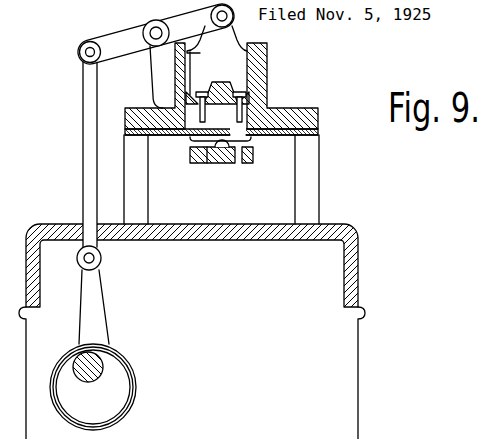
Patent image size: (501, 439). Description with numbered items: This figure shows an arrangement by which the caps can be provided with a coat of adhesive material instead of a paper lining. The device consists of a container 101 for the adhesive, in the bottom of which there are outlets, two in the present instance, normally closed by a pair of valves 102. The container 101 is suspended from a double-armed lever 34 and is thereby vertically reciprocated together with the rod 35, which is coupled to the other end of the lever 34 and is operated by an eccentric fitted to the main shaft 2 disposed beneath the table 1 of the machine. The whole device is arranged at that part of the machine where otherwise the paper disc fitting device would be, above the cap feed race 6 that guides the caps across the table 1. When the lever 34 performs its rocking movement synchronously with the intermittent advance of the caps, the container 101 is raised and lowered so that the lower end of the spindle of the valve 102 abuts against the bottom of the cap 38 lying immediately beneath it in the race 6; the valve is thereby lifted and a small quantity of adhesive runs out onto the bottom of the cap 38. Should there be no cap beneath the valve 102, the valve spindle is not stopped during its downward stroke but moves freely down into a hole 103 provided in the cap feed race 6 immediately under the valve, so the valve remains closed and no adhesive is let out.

The table 1 is at (356, 237).
The main shaft 2 is at (101, 371).
The cap feeding race 6 is at (249, 164).
The double-armed lever 34 is at (137, 27).
The rod 35 is at (84, 161).
The cap 38 is at (250, 140).
The container 101 is at (238, 72).
The valve 102 is at (240, 115).
The hole 103 is at (236, 165).